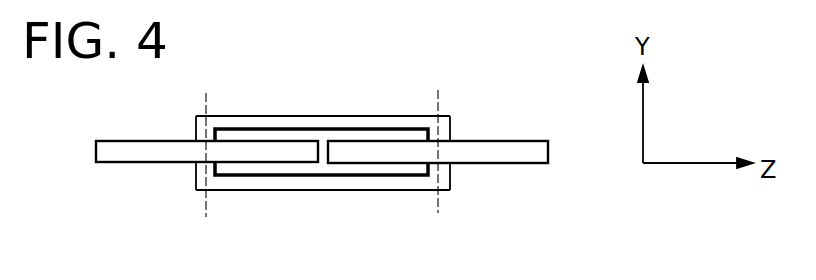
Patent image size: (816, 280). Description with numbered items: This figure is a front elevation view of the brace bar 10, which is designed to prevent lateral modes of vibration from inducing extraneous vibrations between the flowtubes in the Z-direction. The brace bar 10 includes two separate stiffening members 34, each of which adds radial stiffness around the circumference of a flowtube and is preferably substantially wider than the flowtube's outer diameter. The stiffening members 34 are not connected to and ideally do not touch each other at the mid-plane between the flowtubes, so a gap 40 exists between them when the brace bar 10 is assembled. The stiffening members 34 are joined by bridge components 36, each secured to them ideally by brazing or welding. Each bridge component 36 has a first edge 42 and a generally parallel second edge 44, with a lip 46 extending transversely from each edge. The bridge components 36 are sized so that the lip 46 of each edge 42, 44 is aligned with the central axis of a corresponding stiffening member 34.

The brace bar 10 is at (364, 73).
The stiffening member 34 is at (108, 141).
The bridge component 36 is at (242, 116).
The gap 40 is at (326, 159).
The first edge 42 is at (196, 190).
The second edge 44 is at (451, 190).
The lip 46 is at (196, 170).